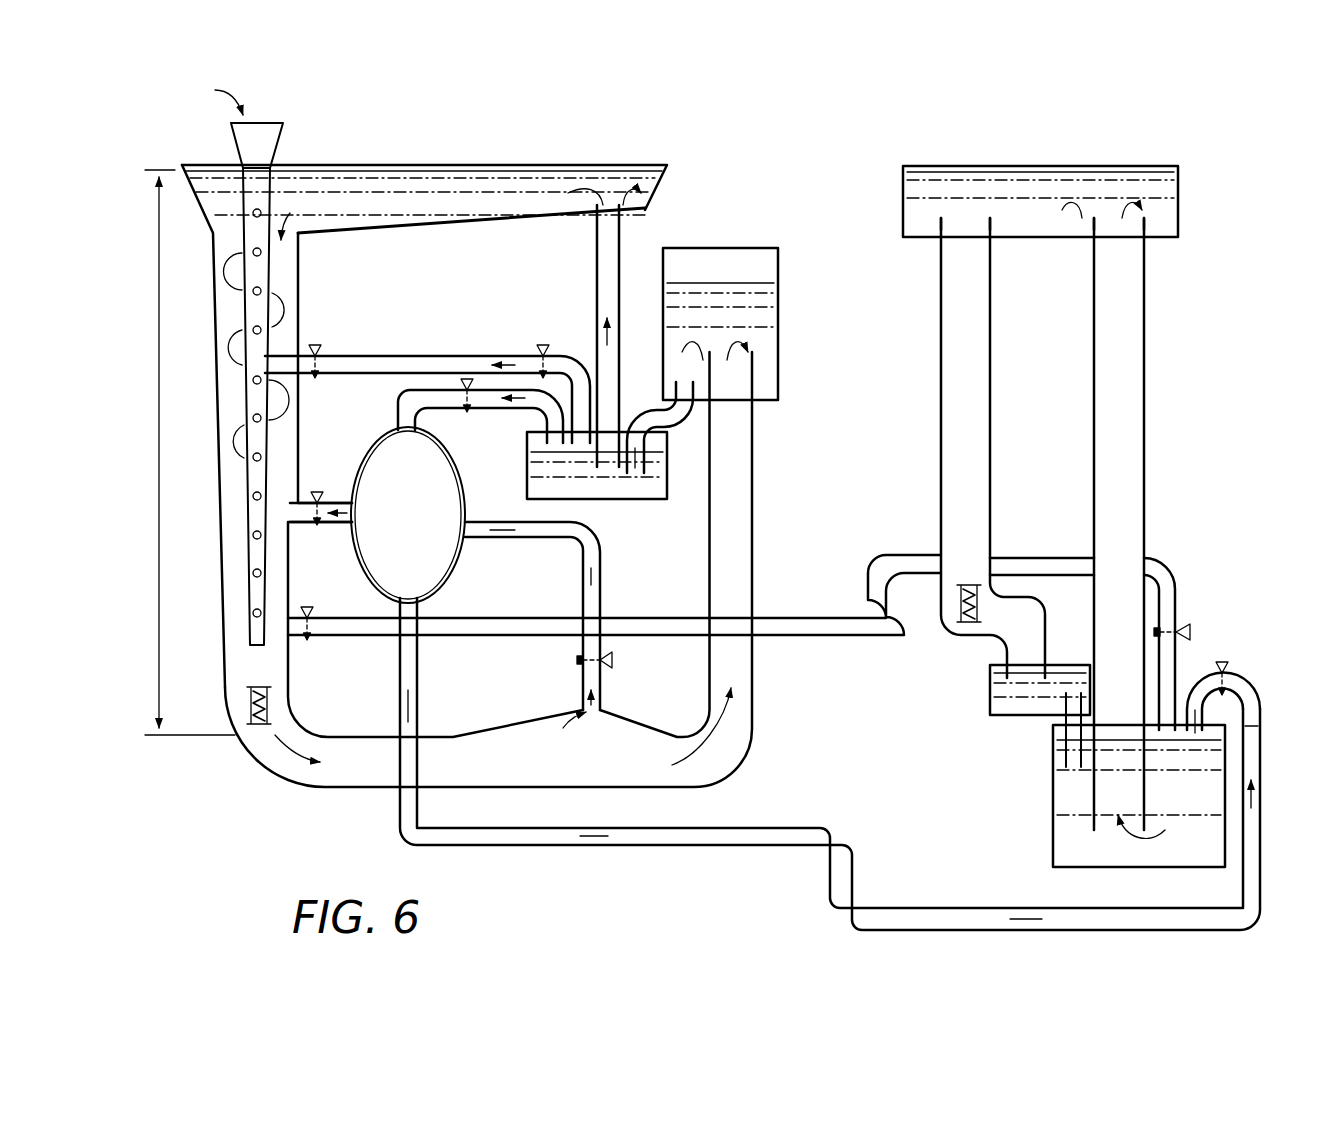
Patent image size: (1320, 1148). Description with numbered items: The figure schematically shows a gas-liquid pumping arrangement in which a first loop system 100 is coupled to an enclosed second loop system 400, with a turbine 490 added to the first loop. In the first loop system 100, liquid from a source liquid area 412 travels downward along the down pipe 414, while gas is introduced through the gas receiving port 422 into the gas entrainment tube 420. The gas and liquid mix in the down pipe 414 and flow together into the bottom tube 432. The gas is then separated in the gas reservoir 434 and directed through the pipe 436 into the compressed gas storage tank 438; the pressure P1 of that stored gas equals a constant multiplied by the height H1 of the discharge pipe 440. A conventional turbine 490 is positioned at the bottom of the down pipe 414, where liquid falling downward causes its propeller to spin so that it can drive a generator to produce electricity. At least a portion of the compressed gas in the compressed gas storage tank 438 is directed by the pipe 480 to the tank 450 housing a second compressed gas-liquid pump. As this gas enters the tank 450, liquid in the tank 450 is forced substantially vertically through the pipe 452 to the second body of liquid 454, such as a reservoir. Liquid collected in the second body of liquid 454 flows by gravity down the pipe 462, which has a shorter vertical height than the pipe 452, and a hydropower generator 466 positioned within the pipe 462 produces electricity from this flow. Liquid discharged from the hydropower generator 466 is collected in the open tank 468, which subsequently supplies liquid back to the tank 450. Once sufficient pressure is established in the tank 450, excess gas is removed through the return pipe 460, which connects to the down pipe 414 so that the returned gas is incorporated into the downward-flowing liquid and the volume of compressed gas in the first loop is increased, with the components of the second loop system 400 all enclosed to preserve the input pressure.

The first loop system 100 is at (583, 157).
The second loop system 400 is at (1092, 155).
The source liquid area 412 is at (418, 190).
The down pipe 414 is at (222, 457).
The gas entrainment tube 420 is at (250, 511).
The gas receiving port 422 is at (282, 140).
The bottom tube 432 is at (457, 775).
The gas reservoir 434 is at (627, 737).
The pipe 436 is at (583, 596).
The compressed gas storage tank 438 is at (442, 548).
The discharge pipe 440 is at (757, 497).
The tank 450 is at (1105, 868).
The pipe 452 is at (1146, 440).
The second body of liquid 454 is at (1180, 212).
The return pipe 460 is at (457, 640).
The down pipe 462 is at (993, 398).
The hydropower generator 466 is at (941, 618).
The open tank 468 is at (990, 700).
The pipe 480 is at (615, 845).
The turbine 490 is at (250, 710).
The pressure P1 is at (378, 565).
The height H1 is at (190, 452).